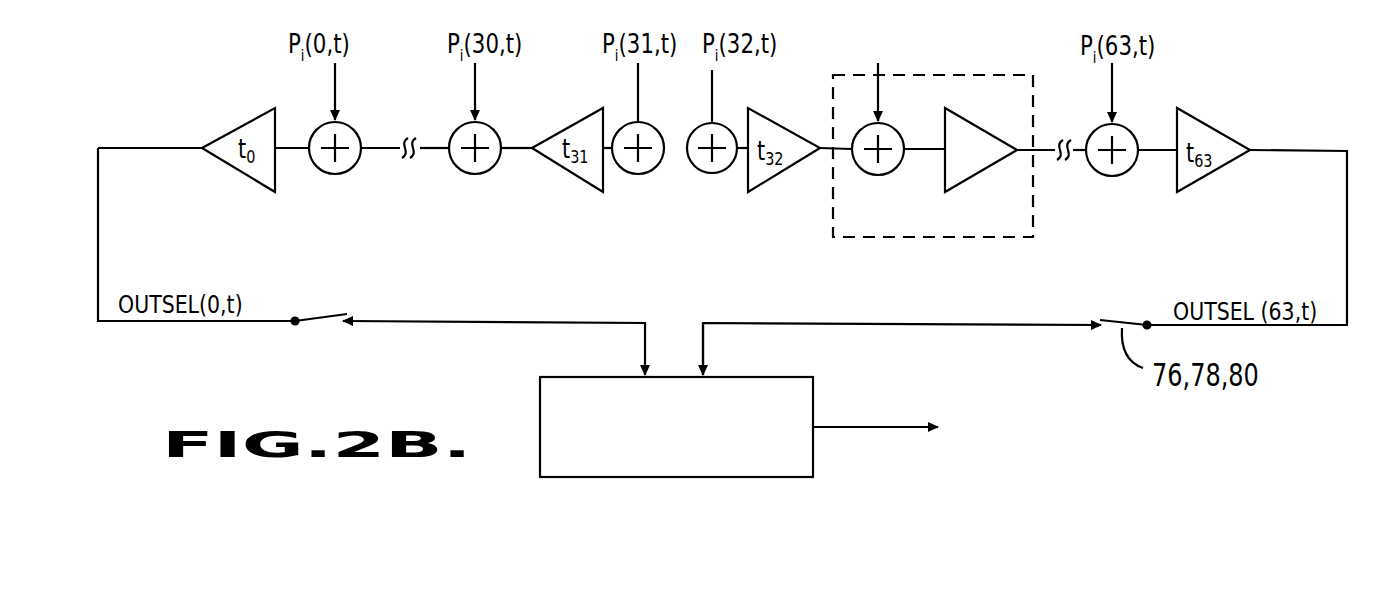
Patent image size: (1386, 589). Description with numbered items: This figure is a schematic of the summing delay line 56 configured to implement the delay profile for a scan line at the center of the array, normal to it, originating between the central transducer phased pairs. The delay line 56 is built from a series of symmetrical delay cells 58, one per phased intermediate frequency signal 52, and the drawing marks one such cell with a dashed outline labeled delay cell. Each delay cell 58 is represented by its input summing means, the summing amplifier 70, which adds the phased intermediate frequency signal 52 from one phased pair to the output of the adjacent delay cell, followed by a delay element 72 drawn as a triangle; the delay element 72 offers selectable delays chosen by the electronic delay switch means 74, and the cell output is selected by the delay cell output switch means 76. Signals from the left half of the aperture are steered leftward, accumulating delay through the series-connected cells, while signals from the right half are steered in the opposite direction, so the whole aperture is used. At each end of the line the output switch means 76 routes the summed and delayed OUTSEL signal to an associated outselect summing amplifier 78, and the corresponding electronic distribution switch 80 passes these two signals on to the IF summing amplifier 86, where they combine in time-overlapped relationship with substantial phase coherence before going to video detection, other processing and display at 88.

The phased intermediate frequency signal 52 is at (878, 88).
The summing delay line 56 is at (84, 187).
The delay cell 58 is at (983, 75).
The summing amplifier 70 is at (860, 168).
The delay element 72 is at (1051, 165).
The electronic delay switch means 74 is at (1051, 165).
The delay cell output switch means 76 is at (993, 165).
The outselect summing amplifier 78 is at (284, 352).
The electronic distribution switch 80 is at (320, 322).
The IF summing amplifier 86 is at (540, 385).
The video detection, processing and display 88 is at (1037, 431).